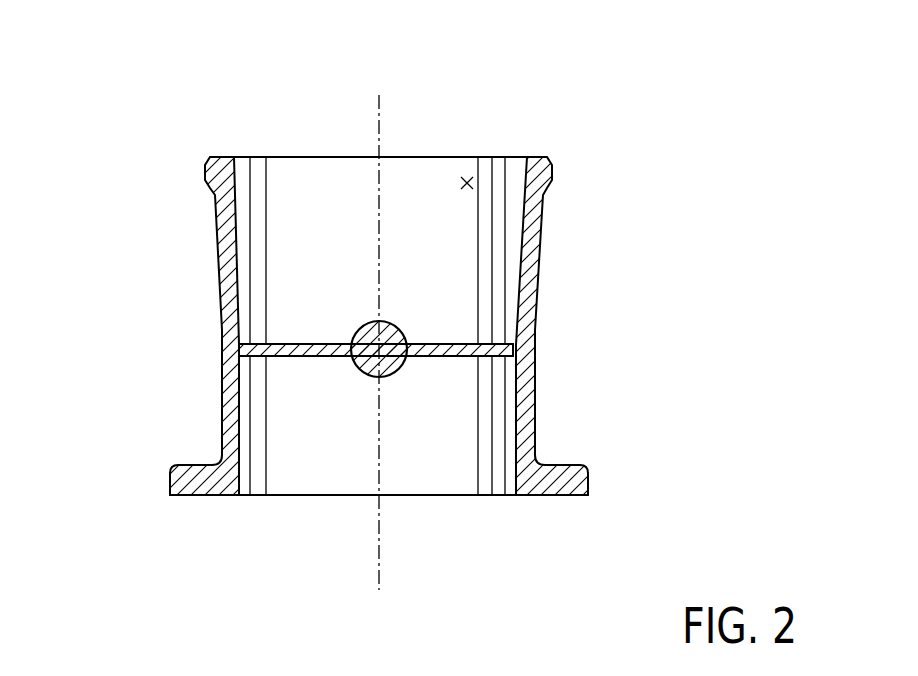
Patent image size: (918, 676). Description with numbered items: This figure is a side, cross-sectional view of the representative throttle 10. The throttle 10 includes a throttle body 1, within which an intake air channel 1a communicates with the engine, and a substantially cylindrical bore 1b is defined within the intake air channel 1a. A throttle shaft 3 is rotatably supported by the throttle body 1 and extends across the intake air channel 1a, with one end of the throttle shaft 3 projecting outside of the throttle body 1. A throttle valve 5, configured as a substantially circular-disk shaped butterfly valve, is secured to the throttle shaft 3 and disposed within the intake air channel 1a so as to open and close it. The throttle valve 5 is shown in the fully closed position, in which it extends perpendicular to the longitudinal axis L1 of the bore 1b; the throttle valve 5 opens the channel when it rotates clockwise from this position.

The throttle 10 is at (195, 288).
The throttle body 1 is at (530, 238).
The intake air channel 1a is at (467, 178).
The bore 1b is at (516, 443).
The throttle shaft 3 is at (360, 378).
The throttle valve 5 is at (463, 337).
The longitudinal axis L1 is at (375, 365).